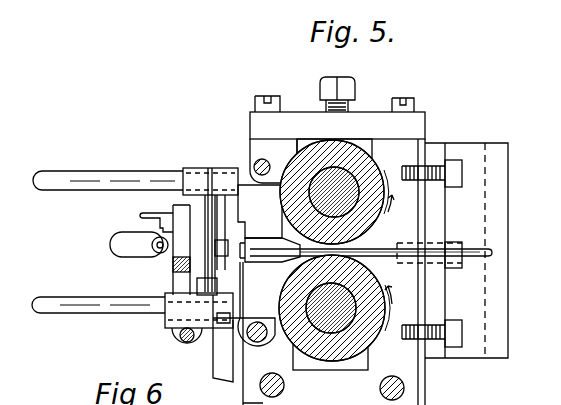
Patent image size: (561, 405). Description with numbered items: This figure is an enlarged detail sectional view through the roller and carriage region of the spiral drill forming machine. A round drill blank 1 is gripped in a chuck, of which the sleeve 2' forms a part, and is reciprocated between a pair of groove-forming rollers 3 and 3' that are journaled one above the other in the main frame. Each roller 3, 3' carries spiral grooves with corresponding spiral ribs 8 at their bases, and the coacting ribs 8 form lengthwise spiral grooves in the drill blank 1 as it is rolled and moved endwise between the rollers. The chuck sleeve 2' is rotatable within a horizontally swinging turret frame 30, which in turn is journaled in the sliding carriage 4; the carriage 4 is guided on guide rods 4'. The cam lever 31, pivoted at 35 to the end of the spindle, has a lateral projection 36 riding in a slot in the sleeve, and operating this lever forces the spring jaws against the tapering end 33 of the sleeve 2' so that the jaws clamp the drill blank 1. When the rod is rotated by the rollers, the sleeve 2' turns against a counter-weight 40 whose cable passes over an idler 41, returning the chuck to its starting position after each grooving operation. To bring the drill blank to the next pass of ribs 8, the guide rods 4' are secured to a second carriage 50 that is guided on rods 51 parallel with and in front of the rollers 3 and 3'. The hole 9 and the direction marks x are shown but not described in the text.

The drill blank 1 is at (490, 255).
The sleeve 2' is at (270, 262).
The groove-forming roller 3 is at (334, 327).
The groove-forming roller 3' is at (334, 179).
The carriage 4 is at (193, 241).
The guide rods 4' is at (107, 247).
The spiral ribs 8 is at (378, 175).
The hole 9 is at (183, 338).
The turret frame 30 is at (185, 215).
The cam lever 31 is at (118, 257).
The tapering end 33 is at (256, 333).
The pivot 35 is at (156, 252).
The lateral projection 36 is at (140, 215).
The counter-weight 40 is at (240, 252).
The idler 41 is at (216, 200).
The second carriage 50 is at (262, 225).
The rods 51 is at (262, 167).
The direction of rotation x is at (397, 249).